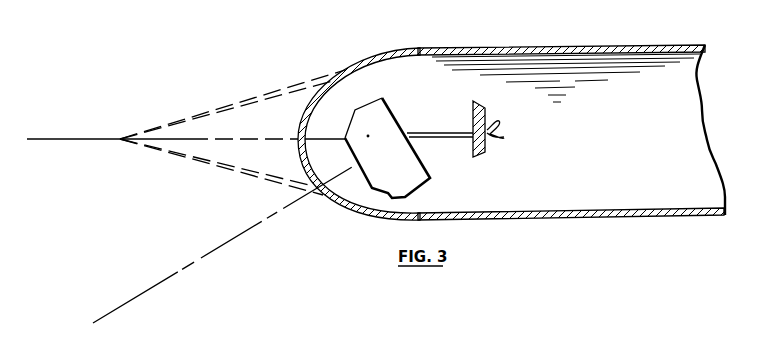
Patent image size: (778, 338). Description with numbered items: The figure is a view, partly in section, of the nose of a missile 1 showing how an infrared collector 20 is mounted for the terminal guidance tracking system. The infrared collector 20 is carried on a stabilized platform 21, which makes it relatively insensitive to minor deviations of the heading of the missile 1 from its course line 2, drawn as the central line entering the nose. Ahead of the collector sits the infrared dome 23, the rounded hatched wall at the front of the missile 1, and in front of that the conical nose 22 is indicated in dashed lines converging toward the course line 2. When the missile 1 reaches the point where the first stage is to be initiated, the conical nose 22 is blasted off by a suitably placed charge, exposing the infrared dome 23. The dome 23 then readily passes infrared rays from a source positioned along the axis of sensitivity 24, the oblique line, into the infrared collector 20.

The missile 1 is at (428, 69).
The course line 2 is at (37, 140).
The infrared collector 20 is at (392, 126).
The stabilized platform 21 is at (487, 122).
The conical nose 22 is at (239, 104).
The infrared dome 23 is at (299, 122).
The axis of sensitivity 24 is at (205, 255).